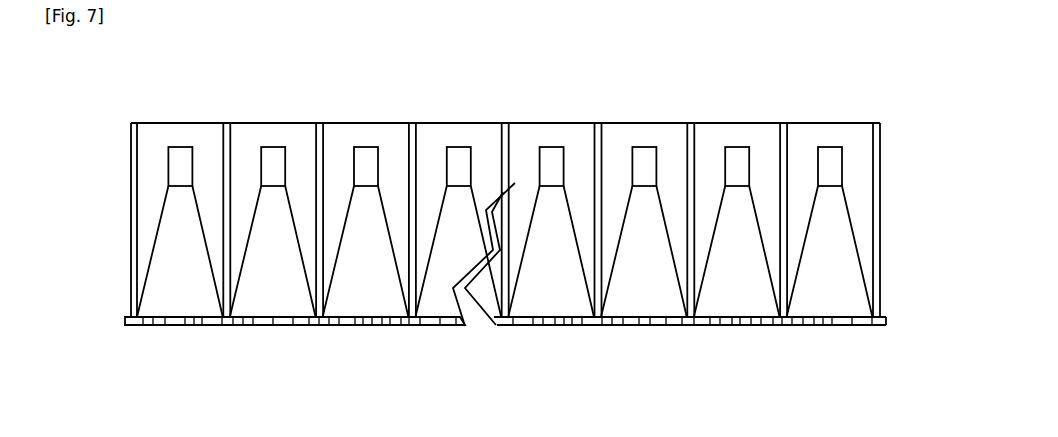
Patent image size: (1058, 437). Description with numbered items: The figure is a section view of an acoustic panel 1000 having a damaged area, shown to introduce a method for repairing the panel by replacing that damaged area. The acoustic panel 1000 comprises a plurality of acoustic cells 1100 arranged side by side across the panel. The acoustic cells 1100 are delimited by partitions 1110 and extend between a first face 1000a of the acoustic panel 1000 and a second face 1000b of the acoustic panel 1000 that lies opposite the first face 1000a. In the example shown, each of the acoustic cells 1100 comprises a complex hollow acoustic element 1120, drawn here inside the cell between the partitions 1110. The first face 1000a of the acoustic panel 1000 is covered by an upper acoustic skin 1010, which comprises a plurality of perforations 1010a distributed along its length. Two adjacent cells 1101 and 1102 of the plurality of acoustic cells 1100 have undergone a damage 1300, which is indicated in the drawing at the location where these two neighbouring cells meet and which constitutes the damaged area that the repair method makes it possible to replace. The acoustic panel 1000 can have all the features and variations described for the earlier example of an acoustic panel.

The acoustic panel 1000 is at (903, 157).
The first face of the acoustic panel 1000a is at (848, 326).
The second face of the acoustic panel 1000b is at (785, 122).
The upper acoustic skin 1010 is at (180, 320).
The perforations 1010a is at (747, 326).
The acoustic cells 1100 is at (464, 197).
The first damaged adjacent cell 1101 is at (458, 132).
The second damaged adjacent cell 1102 is at (548, 132).
The partitions 1110 is at (312, 137).
The complex hollow acoustic elements 1120 is at (180, 225).
The damage 1300 is at (478, 320).